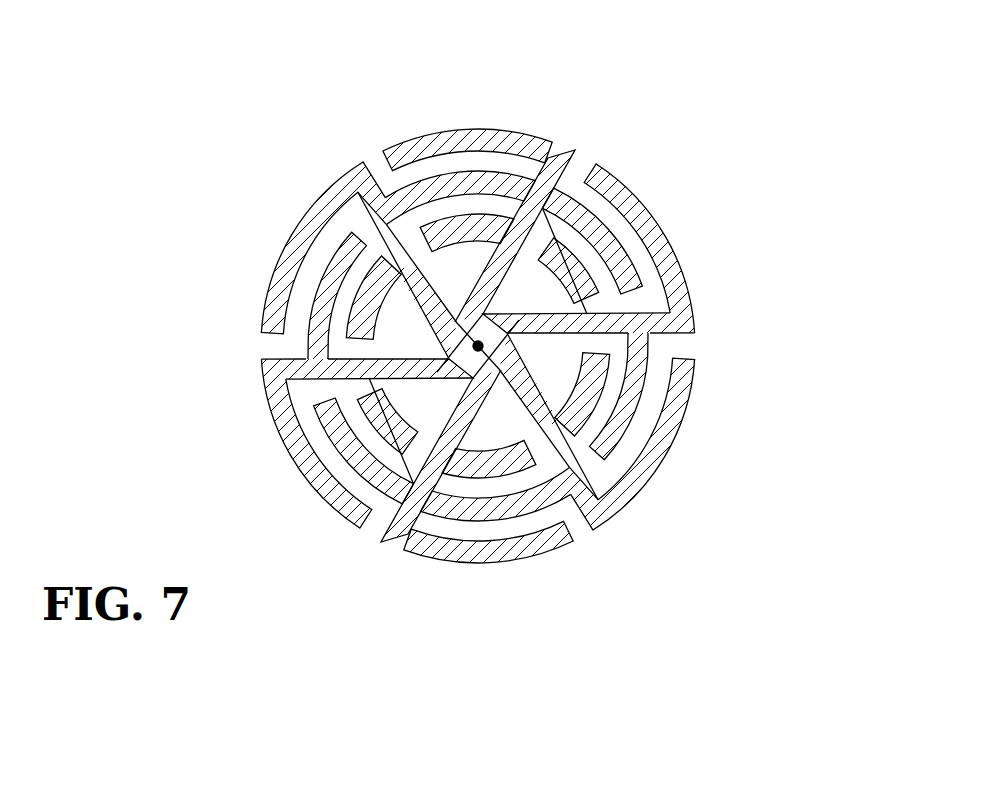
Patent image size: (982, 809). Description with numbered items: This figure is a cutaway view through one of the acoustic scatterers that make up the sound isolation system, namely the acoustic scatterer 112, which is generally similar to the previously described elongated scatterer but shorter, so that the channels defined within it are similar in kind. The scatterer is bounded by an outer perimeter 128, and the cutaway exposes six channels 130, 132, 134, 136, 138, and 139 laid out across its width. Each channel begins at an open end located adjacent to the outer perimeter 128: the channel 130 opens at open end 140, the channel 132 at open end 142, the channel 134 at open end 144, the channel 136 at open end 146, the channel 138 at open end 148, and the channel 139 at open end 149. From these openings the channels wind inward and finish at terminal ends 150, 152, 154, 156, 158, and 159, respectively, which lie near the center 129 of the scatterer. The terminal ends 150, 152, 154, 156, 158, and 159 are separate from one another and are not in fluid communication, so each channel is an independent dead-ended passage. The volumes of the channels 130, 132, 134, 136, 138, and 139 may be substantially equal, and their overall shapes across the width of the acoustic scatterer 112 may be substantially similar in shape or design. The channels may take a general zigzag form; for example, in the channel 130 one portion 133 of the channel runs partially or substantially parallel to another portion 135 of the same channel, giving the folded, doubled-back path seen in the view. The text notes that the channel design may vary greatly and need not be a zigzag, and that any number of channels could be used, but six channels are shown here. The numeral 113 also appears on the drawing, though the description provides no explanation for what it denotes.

The acoustic scatterer 112 is at (697, 157).
The outer ring 113 is at (681, 246).
The outer perimeter 128 is at (282, 253).
The center 129 is at (502, 380).
The channel 130 is at (446, 166).
The channel 132 is at (640, 260).
The portion of the channel 133 is at (482, 230).
The channel 134 is at (650, 395).
The portion of the channel 135 is at (422, 178).
The channel 136 is at (450, 528).
The channel 138 is at (352, 415).
The channel 139 is at (336, 233).
The open end 140 is at (374, 167).
The open end 142 is at (593, 162).
The open end 144 is at (698, 358).
The open end 146 is at (580, 525).
The open end 148 is at (374, 523).
The open end 149 is at (264, 343).
The terminal end 150 is at (552, 147).
The terminal end 152 is at (558, 303).
The terminal end 154 is at (557, 400).
The terminal end 156 is at (483, 445).
The terminal end 158 is at (385, 418).
The terminal end 159 is at (400, 323).